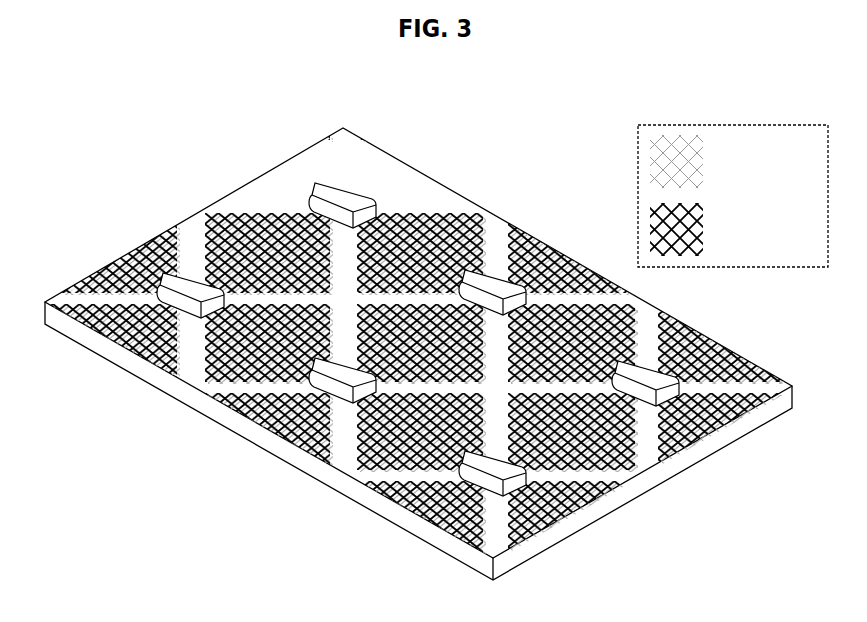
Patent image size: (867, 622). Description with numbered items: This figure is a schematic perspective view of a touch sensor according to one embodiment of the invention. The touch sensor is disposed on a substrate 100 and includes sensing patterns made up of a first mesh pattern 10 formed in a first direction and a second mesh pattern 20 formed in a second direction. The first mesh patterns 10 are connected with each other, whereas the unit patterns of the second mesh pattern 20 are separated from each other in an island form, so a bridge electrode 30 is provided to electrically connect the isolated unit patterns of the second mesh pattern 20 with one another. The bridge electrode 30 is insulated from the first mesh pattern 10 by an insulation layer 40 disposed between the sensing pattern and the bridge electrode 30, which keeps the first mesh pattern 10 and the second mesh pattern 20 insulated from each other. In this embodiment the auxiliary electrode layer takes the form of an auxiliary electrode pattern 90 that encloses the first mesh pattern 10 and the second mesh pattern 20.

The first mesh pattern 10 is at (445, 172).
The second mesh pattern 20 is at (478, 206).
The bridge electrode 30 is at (332, 187).
The insulation layer 40 is at (279, 166).
The auxiliary electrode pattern 90 is at (388, 160).
The substrate 100 is at (645, 484).